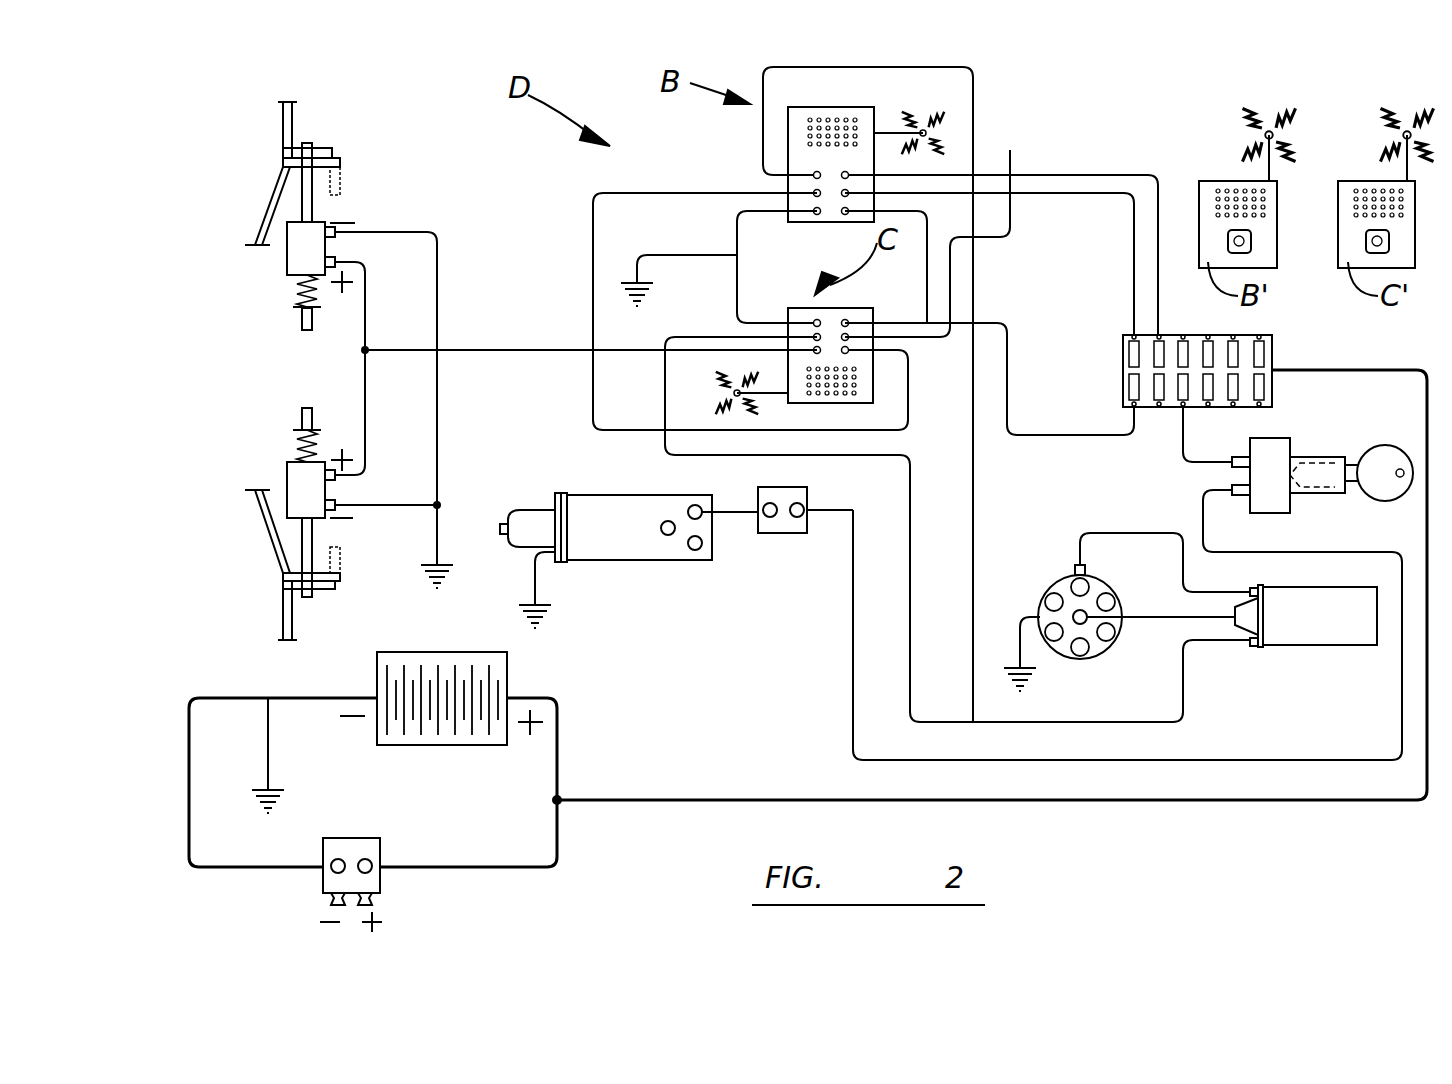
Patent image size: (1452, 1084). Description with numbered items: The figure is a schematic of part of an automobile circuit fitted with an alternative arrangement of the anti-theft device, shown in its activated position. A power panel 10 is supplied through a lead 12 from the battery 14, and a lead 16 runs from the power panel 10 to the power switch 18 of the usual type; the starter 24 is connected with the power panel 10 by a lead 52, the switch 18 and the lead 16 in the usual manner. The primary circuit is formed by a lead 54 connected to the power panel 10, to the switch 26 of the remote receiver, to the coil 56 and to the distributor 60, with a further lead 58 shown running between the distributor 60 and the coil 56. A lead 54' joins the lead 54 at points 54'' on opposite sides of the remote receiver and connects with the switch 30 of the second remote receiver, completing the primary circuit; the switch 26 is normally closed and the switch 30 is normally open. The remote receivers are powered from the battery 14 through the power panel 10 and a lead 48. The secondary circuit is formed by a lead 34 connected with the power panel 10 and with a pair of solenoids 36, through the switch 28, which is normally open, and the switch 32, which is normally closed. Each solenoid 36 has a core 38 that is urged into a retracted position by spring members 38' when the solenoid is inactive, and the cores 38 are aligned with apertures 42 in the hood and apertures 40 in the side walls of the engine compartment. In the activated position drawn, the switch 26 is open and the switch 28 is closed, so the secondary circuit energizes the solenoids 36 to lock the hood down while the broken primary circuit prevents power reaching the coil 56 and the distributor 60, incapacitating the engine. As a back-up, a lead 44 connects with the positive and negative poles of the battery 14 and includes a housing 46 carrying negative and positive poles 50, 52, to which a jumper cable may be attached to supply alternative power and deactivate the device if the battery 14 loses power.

The power panel 10 is at (1275, 347).
The lead 12 is at (1138, 800).
The battery 14 is at (477, 738).
The lead 16 is at (1183, 440).
The power switch 18 is at (1290, 440).
The starter 24 is at (608, 530).
The flip flop switch 26 is at (843, 175).
The flip flop switch 28 is at (833, 195).
The flip flop switch 30 is at (825, 310).
The flip flop switch 32 is at (840, 354).
The lead 34 is at (590, 290).
The solenoid 36 is at (305, 252).
The core 38 is at (248, 370).
The spring member 38' is at (252, 368).
The aperture 40 is at (313, 172).
The aperture 42 is at (310, 145).
The lead 44 is at (190, 810).
The housing 46 is at (347, 838).
The lead 48 is at (1010, 368).
The pole 50 is at (330, 900).
The pole / lead 52 is at (730, 514).
The lead 54 is at (1121, 422).
The lead 54' is at (718, 395).
The connection point 54'' is at (872, 404).
The coil 56 is at (1325, 620).
The coil wire 58 is at (1080, 540).
The distributor 60 is at (1055, 585).